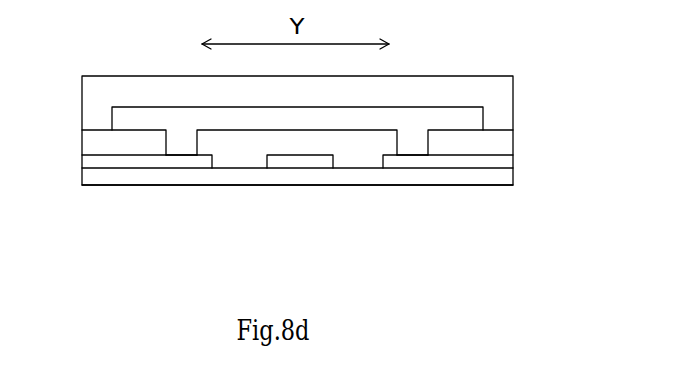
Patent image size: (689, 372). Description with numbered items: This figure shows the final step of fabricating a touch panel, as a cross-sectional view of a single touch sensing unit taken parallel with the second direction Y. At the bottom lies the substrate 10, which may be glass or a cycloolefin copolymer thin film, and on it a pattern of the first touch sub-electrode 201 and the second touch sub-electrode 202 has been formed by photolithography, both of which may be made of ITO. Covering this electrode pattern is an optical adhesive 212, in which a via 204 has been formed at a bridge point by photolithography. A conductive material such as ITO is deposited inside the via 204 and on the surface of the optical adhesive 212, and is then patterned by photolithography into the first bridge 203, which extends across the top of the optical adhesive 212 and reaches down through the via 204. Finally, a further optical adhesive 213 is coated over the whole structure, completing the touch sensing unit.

The substrate 10 is at (507, 175).
The optical adhesive 213 is at (490, 92).
The first bridge 203 is at (125, 122).
The second touch sub-electrode 202 is at (150, 158).
The first touch sub-electrode 201 is at (298, 160).
The optical adhesive 212 is at (97, 148).
The via 204 is at (412, 138).